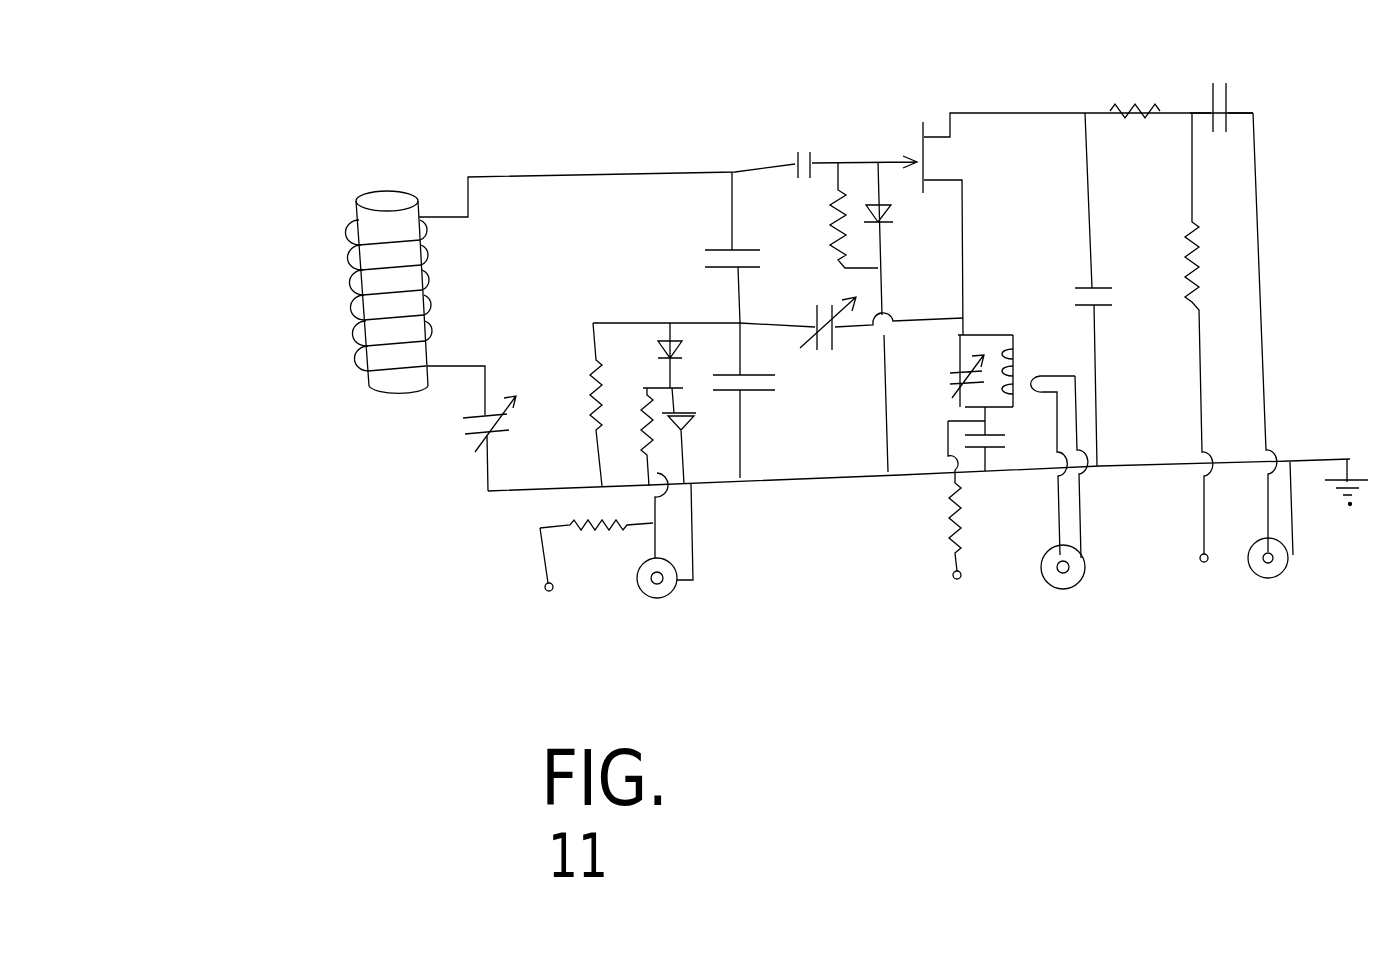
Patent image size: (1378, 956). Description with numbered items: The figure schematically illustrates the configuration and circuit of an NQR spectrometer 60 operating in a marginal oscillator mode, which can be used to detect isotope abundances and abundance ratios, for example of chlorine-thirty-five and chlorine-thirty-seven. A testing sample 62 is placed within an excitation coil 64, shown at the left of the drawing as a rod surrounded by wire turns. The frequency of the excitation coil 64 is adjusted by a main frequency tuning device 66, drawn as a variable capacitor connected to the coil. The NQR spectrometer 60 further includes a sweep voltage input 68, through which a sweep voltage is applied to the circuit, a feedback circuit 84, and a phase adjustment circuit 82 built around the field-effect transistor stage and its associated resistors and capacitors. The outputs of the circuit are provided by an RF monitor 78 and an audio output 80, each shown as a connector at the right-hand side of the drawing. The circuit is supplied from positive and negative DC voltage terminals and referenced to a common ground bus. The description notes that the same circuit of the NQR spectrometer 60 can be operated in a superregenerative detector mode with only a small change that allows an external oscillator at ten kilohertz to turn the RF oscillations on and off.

The NQR spectrometer 60 is at (400, 574).
The testing sample 62 is at (386, 198).
The excitation coil 64 is at (325, 305).
The main frequency tuning device 66 is at (412, 441).
The sweep voltage input 68 is at (644, 584).
The RF monitor 78 is at (1063, 543).
The audio output 80 is at (1287, 402).
The phase adjustment circuit 82 is at (1026, 331).
The feedback circuit 84 is at (928, 472).